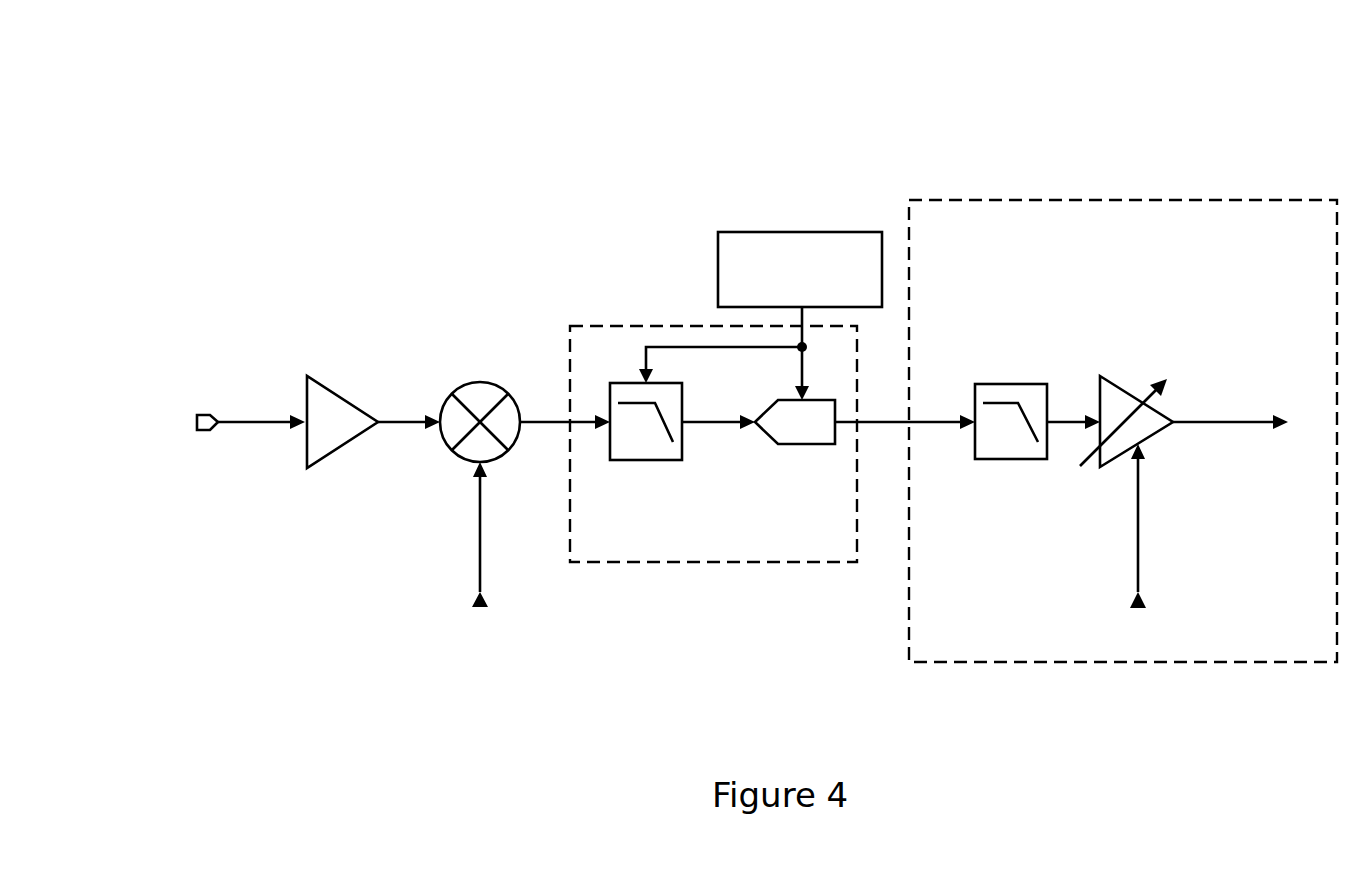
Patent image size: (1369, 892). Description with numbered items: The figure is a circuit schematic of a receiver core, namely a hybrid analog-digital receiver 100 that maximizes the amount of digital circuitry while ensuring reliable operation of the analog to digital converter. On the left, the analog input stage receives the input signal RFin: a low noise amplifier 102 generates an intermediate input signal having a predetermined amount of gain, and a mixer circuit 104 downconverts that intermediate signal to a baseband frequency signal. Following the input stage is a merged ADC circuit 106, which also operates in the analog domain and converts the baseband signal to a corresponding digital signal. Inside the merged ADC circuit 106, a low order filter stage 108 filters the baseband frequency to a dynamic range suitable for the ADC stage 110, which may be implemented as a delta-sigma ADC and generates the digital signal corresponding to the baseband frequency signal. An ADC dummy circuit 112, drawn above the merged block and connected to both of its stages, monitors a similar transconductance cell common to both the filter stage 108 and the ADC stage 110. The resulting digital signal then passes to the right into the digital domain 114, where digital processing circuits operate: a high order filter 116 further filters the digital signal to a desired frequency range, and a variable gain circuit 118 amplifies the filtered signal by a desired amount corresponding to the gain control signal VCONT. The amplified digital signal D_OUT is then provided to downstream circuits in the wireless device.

The hybrid analog-digital receiver 100 is at (706, 130).
The low noise amplifier 102 is at (330, 453).
The mixer circuit 104 is at (452, 450).
The merged ADC circuit 106 is at (628, 325).
The low order filter stage 108 is at (647, 460).
The ADC stage 110 is at (807, 445).
The ADC dummy circuit 112 is at (807, 230).
The digital domain 114 is at (1110, 198).
The high order filter 116 is at (1008, 460).
The variable gain circuit 118 is at (1150, 437).